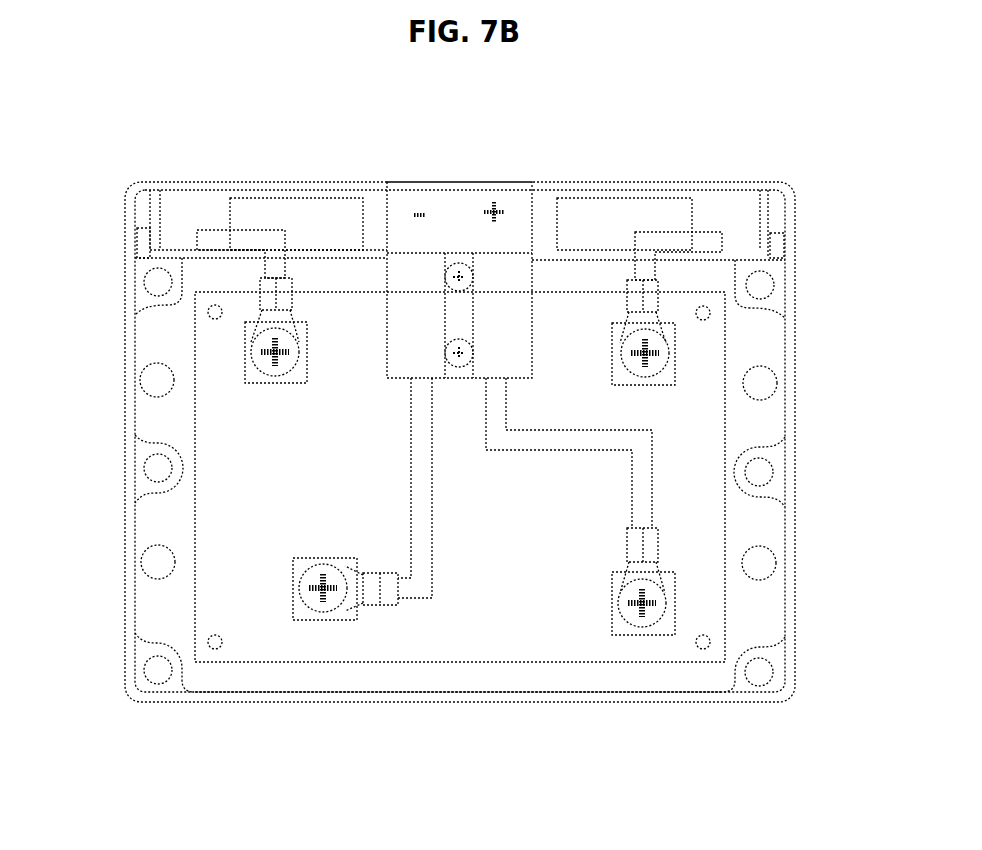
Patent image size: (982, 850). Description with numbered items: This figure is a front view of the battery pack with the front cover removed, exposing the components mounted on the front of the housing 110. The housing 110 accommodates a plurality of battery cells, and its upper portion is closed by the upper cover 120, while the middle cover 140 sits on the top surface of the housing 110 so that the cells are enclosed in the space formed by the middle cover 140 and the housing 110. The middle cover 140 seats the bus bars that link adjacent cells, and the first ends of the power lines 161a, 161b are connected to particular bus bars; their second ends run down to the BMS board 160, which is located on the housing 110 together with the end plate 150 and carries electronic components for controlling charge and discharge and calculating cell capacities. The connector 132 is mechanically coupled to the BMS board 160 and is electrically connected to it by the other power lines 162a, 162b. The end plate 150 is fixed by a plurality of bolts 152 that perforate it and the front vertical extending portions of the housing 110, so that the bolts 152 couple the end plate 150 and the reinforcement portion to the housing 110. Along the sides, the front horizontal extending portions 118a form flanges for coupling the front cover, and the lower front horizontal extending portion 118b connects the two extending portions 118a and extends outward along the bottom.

The housing 110 is at (772, 708).
The front horizontal extending portions 118a is at (135, 362).
The front horizontal extending portion 118b is at (677, 702).
The upper cover 120 is at (736, 183).
The connector 132 is at (467, 240).
The middle cover 140 is at (345, 250).
The end plate 150 is at (763, 430).
The bolts 152 is at (148, 386).
The BMS board 160 is at (510, 558).
The power line 161a is at (265, 238).
The power line 161b is at (672, 240).
The power line 162a is at (425, 532).
The power line 162b is at (638, 505).